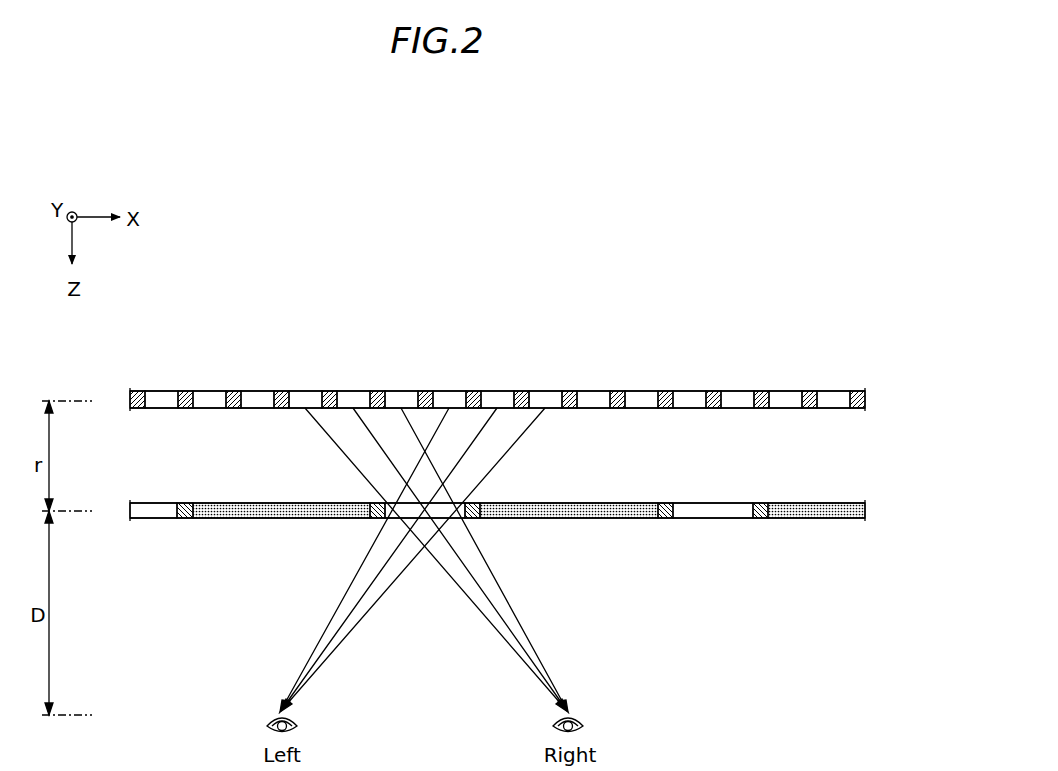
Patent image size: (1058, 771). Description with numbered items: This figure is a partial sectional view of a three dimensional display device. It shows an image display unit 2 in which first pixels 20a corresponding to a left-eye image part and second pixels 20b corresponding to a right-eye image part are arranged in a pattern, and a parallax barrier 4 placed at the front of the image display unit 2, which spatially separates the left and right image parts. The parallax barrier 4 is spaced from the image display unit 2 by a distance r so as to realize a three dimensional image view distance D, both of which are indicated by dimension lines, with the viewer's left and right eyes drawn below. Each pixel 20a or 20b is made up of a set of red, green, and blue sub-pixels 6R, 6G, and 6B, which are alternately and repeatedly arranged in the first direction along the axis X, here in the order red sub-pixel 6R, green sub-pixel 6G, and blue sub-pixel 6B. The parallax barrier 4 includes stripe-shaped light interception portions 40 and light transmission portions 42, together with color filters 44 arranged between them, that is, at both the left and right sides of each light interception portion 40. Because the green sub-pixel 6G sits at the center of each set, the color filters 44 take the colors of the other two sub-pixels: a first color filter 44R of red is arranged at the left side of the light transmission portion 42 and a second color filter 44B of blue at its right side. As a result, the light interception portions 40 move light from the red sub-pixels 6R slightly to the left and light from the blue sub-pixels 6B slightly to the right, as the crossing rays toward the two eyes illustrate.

The image display unit 2 is at (872, 394).
The parallax barrier 4 is at (868, 521).
The red sub-pixel 6R is at (449, 386).
The green sub-pixel 6G is at (497, 386).
The blue sub-pixel 6B is at (545, 386).
The first pixel 20a is at (641, 362).
The second pixel 20b is at (785, 362).
The light interception portion 40 is at (593, 541).
The light transmission portion 42 is at (728, 519).
The color filter 44 is at (648, 460).
The first color filter 44R is at (668, 484).
The second color filter 44B is at (761, 484).